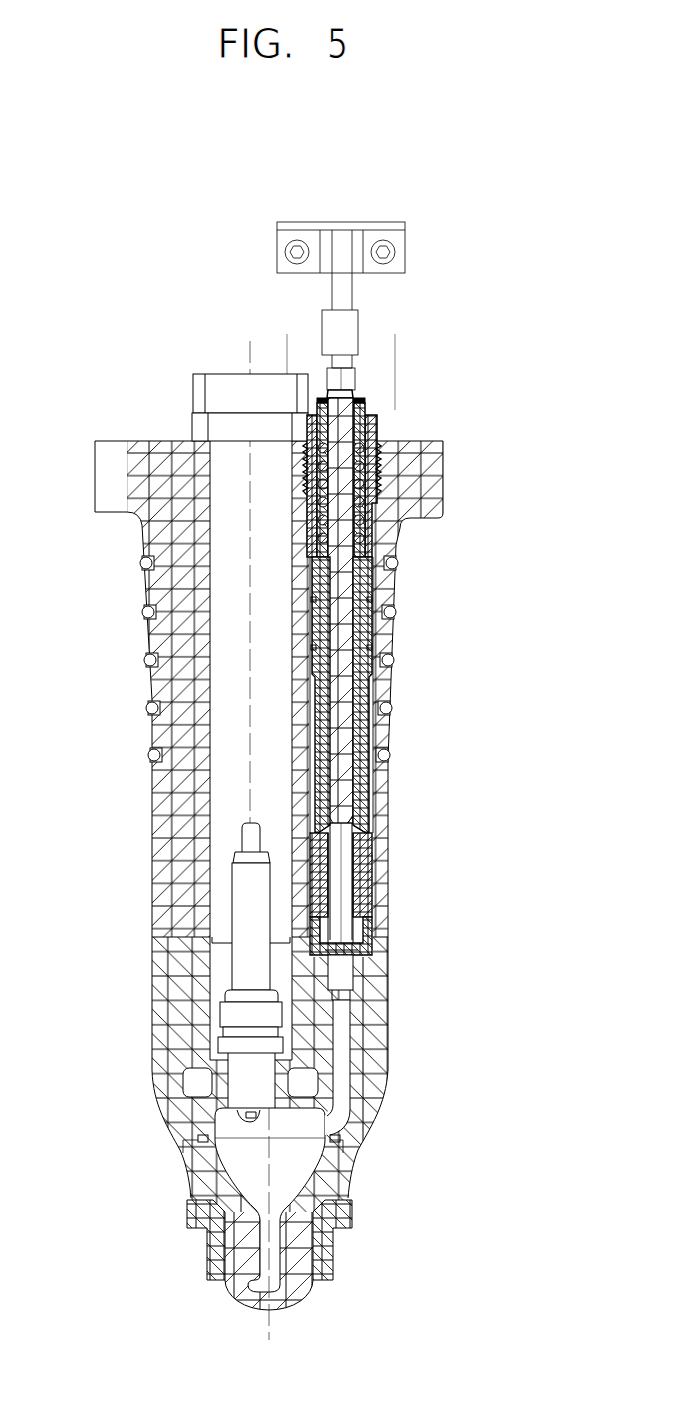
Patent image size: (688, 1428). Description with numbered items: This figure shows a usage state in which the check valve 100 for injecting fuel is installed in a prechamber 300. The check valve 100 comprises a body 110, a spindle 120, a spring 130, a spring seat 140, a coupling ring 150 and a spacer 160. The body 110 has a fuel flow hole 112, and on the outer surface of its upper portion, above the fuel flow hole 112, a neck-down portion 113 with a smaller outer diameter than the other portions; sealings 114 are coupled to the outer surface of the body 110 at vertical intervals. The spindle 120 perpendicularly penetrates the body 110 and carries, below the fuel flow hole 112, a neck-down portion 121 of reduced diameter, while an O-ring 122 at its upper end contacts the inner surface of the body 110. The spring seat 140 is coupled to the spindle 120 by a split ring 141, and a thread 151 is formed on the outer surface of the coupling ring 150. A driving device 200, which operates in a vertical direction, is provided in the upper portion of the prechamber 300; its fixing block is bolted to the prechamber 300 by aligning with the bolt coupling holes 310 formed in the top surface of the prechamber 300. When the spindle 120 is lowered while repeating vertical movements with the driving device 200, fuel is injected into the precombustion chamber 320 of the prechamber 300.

The check valve for injecting fuel 100 is at (404, 676).
The body 110 is at (378, 905).
The fuel flow hole 112 is at (366, 823).
The neck-down portion 113 is at (362, 740).
The sealing 114 is at (377, 648).
The spindle 120 is at (355, 691).
The neck-down portion 121 is at (352, 870).
The O-ring 122 is at (386, 556).
The spring 130 is at (378, 493).
The spring seat 140 is at (375, 428).
The split ring 141 is at (364, 400).
The coupling ring 150 is at (383, 455).
The thread 151 is at (376, 483).
The spacer 160 is at (378, 934).
The driving device 200 is at (348, 302).
The prechamber 300 is at (148, 812).
The bolt coupling holes 310 is at (275, 441).
The precombustion chamber 320 is at (238, 1165).